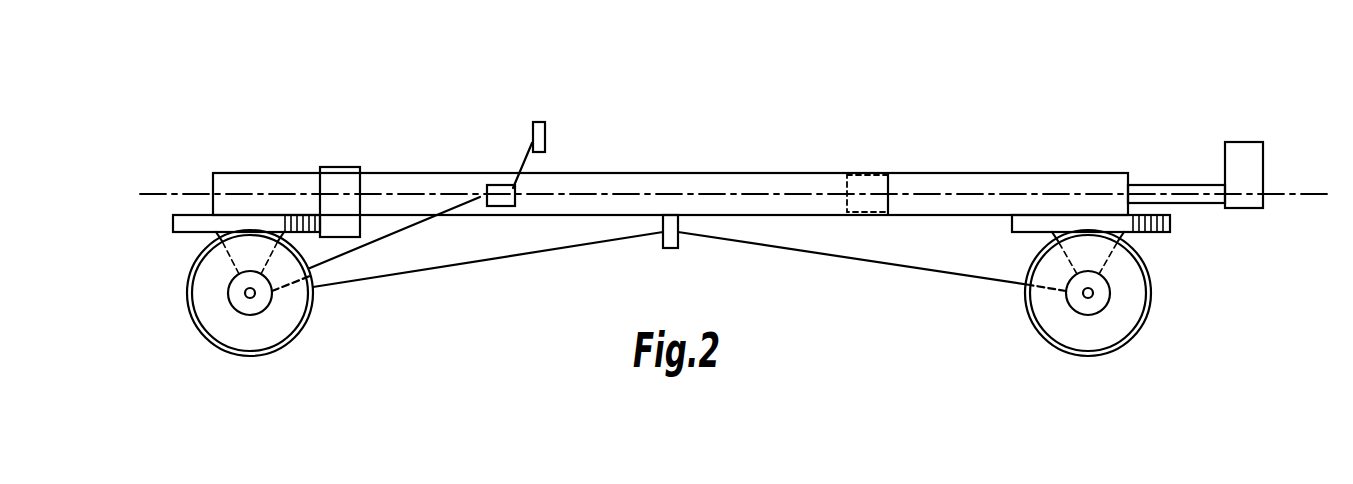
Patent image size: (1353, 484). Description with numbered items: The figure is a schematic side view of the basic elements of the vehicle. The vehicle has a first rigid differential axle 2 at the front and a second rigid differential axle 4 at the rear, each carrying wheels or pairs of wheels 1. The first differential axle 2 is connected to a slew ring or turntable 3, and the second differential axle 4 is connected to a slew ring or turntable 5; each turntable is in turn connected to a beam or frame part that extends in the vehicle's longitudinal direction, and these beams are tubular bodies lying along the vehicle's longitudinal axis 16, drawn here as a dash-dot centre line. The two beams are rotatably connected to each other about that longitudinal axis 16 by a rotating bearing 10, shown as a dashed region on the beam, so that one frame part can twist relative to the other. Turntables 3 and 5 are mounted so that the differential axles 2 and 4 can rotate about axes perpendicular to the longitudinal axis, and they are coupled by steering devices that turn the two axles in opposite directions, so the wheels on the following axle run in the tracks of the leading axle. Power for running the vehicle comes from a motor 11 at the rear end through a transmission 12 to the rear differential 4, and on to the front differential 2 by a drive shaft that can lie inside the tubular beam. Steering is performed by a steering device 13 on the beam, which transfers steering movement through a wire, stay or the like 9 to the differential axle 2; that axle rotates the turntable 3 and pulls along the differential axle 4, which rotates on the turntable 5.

The wheels 1 is at (303, 328).
The first rigid differential axle 2 is at (233, 298).
The slew ring or turntable 3 is at (183, 229).
The second rigid differential axle 4 is at (1103, 297).
The slew ring or turntable 5 is at (1170, 224).
The wire or stay 9 is at (387, 240).
The rotating bearing 10 is at (872, 174).
The motor 11 is at (1253, 165).
The transmission 12 is at (1165, 185).
The steering device 13 is at (523, 163).
The longitudinal axis 16 is at (170, 192).